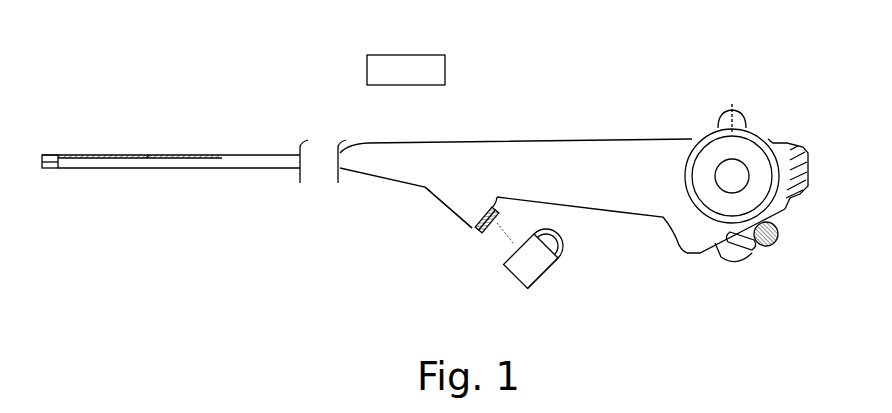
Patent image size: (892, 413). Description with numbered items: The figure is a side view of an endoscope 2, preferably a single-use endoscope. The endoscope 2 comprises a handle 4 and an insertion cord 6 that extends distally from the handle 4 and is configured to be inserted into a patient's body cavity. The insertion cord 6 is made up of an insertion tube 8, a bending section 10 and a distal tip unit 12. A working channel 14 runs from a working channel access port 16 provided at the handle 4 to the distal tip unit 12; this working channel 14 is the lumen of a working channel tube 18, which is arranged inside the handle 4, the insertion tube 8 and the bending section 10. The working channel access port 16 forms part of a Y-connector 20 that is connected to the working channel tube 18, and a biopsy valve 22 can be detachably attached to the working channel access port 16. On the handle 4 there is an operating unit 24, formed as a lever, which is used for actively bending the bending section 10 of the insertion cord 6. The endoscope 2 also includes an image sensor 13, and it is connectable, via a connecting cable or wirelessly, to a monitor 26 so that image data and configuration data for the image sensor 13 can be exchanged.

The endoscope 2 is at (594, 181).
The handle 4 is at (806, 121).
The insertion cord 6 is at (165, 153).
The insertion tube 8 is at (220, 170).
The bending section 10 is at (92, 170).
The distal tip unit 12 is at (44, 170).
The image sensor 13 is at (52, 153).
The working channel 14 is at (495, 248).
The working channel access port 16 is at (476, 234).
The working channel tube 18 is at (280, 168).
The Y-connector 20 is at (461, 226).
The biopsy valve 22 is at (557, 279).
The operating unit 24 is at (722, 111).
The monitor 26 is at (398, 66).